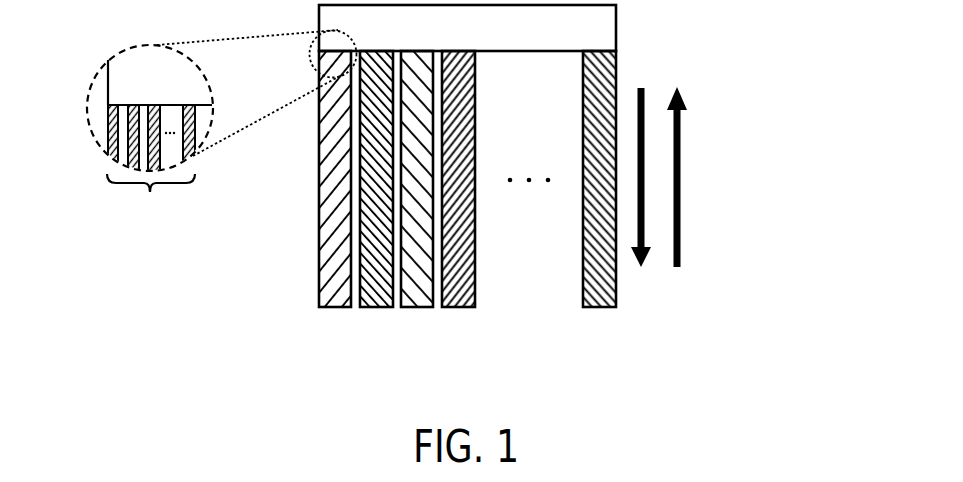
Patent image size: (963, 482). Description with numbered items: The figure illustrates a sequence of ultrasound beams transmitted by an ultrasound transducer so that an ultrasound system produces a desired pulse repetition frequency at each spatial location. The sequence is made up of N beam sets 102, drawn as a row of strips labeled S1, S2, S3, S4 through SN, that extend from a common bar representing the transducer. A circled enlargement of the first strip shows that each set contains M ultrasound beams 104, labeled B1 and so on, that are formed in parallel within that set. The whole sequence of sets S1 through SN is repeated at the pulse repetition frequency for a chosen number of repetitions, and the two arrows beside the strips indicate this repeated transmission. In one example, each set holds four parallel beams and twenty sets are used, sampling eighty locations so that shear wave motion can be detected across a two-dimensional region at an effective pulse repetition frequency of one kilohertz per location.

The ultrasound beam sets 102 is at (419, 174).
The ultrasound beams 104 is at (188, 131).
The first ultrasound beam set S1 is at (335, 197).
The second ultrasound beam set S2 is at (376, 197).
The third ultrasound beam set S3 is at (417, 197).
The fourth ultrasound beam set S4 is at (458, 197).
The Nth ultrasound beam set SN is at (599, 197).
The first ultrasound beam B1 is at (151, 168).